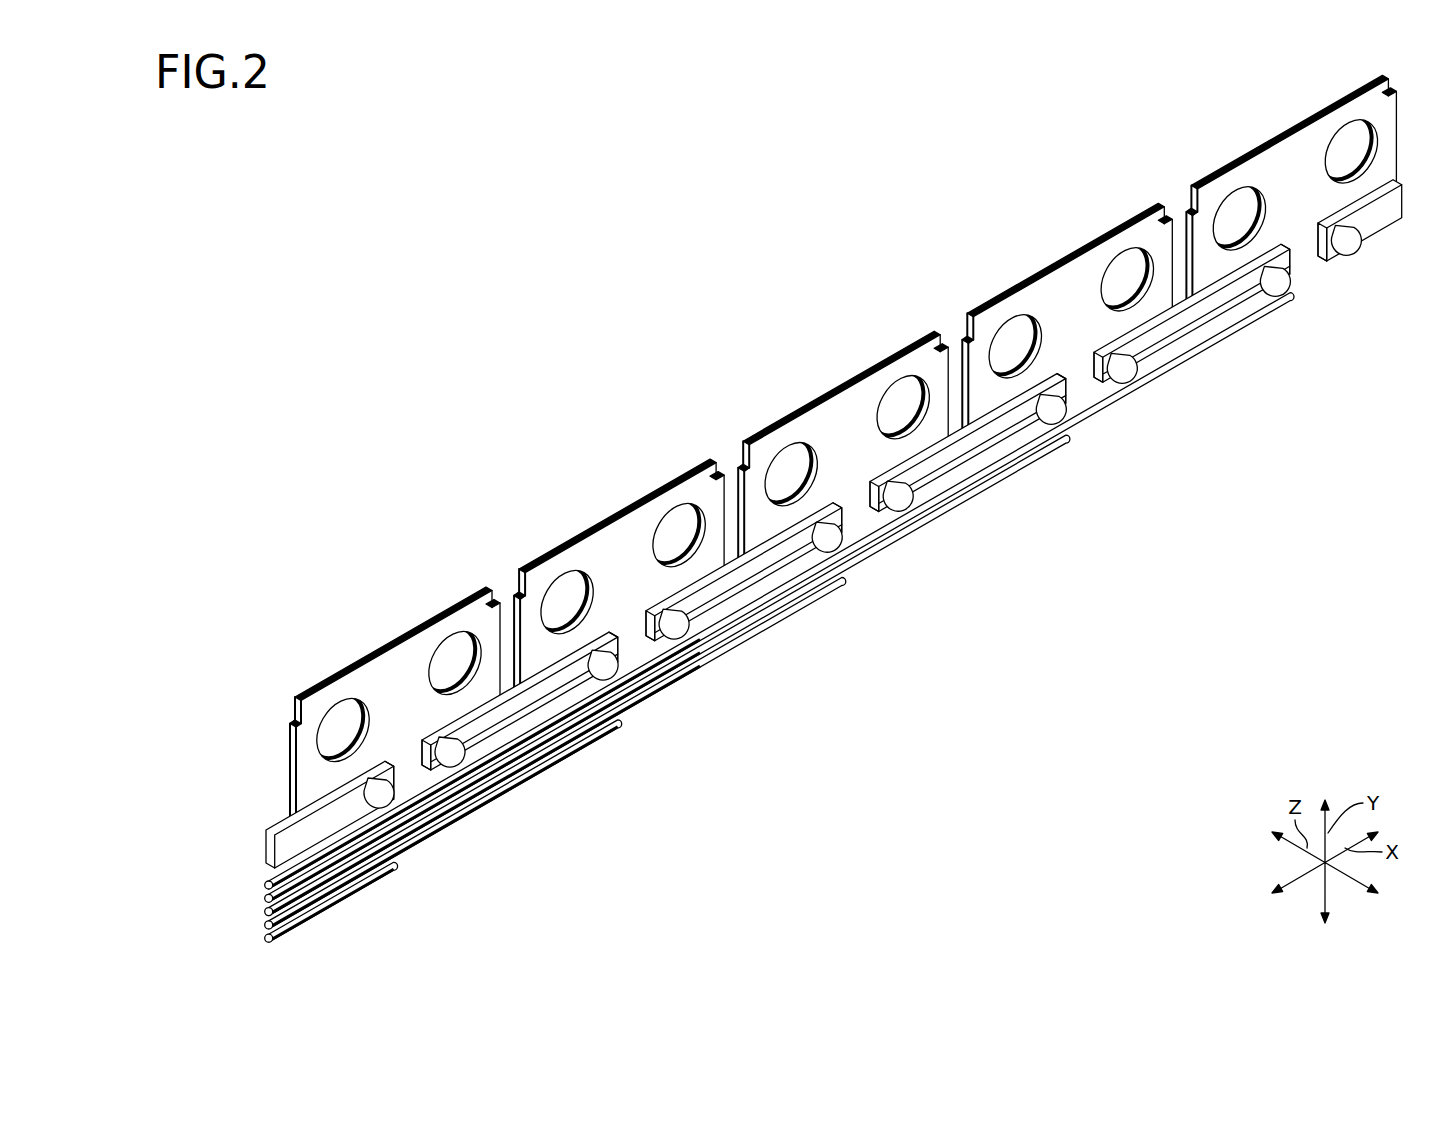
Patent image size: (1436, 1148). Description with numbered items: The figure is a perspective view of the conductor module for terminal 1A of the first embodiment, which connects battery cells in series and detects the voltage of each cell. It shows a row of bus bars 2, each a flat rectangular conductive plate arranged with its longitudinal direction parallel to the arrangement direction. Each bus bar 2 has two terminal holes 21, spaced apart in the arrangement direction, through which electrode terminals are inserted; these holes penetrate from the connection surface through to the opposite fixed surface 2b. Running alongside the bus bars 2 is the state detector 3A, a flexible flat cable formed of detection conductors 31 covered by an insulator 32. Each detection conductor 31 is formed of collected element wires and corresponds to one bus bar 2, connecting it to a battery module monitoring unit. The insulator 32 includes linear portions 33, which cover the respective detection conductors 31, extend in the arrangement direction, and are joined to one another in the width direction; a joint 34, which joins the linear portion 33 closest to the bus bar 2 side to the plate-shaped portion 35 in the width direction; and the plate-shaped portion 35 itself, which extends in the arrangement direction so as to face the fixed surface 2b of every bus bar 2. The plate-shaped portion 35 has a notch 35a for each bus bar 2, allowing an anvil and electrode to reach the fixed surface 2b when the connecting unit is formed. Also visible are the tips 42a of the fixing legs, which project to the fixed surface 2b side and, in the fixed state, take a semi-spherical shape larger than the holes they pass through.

The conductor module for terminal 1A is at (540, 442).
The bus bar 2 is at (843, 444).
The fixed surface 2b is at (740, 419).
The terminal hole 21 is at (844, 410).
The state detector 3A is at (596, 758).
The detection conductor 31 is at (264, 938).
The insulator 32 is at (264, 857).
The linear portion 33 is at (467, 753).
The joint 34 is at (718, 617).
The plate-shaped portion 35 is at (767, 563).
The notch 35a is at (410, 772).
The tip 42a is at (447, 752).